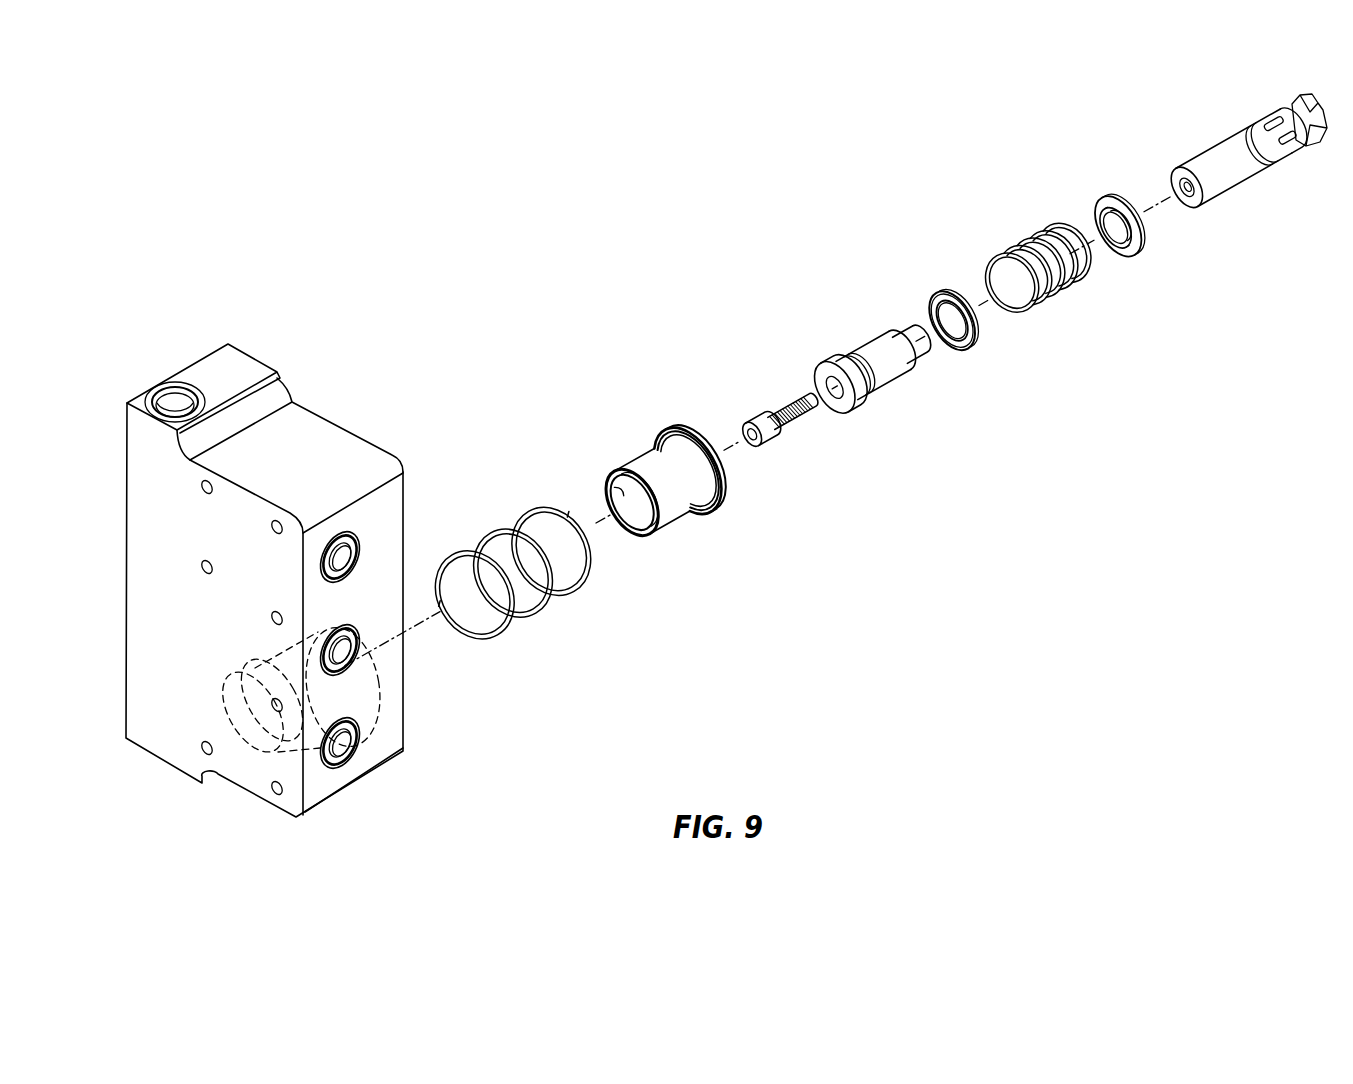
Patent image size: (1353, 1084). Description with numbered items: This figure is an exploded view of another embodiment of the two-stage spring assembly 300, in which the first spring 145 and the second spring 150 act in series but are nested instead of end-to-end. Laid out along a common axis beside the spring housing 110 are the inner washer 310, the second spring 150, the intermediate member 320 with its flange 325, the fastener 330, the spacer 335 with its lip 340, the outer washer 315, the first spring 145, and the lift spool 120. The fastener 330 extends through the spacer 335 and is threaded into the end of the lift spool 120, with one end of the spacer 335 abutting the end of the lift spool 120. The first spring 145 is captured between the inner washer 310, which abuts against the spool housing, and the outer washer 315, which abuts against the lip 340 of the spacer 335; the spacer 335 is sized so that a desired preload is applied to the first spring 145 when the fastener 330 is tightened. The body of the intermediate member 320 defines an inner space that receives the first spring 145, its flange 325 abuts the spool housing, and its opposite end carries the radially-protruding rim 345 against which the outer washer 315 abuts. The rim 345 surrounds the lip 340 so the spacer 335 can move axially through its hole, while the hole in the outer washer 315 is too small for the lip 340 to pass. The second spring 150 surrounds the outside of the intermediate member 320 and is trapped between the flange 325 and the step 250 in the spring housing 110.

The spring housing 110 is at (173, 745).
The lift spool 120 is at (1222, 180).
The first spring 145 is at (1045, 300).
The second spring 150 is at (543, 603).
The step 250 is at (270, 657).
The two-stage spring assembly 300 is at (628, 218).
The inner washer 310 is at (1133, 253).
The outer washer 315 is at (967, 352).
The intermediate member 320 is at (667, 510).
The flange 325 is at (722, 505).
The fastener 330 is at (770, 442).
The spacer 335 is at (895, 385).
The lip 340 is at (853, 410).
The rim 345 is at (607, 507).